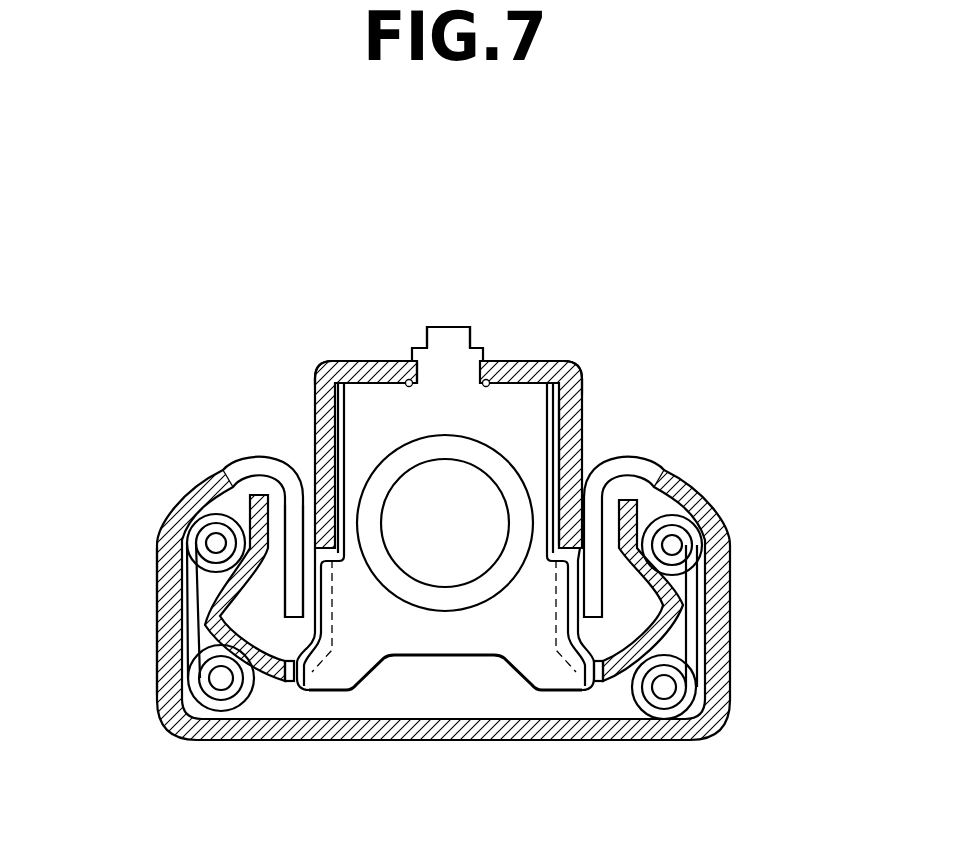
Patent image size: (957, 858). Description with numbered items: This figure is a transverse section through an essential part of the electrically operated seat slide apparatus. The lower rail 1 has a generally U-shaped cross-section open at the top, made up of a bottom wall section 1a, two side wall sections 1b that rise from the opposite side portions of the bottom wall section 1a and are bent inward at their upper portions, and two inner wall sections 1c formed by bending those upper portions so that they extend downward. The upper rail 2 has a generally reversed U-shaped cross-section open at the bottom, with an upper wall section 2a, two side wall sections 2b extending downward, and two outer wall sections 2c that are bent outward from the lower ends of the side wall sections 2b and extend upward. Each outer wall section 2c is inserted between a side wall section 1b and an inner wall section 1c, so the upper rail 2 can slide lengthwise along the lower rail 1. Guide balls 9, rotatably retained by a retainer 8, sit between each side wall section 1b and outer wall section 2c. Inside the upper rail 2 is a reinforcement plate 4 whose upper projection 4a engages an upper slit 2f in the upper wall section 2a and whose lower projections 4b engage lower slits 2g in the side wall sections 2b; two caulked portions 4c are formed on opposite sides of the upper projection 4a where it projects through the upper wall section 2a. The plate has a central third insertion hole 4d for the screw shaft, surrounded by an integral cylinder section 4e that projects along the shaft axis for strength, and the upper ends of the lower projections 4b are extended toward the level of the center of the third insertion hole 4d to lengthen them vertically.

The lower rail 1 is at (465, 742).
The bottom wall section 1a is at (252, 742).
The side wall section 1b is at (160, 623).
The inner wall section 1c is at (285, 589).
The upper rail 2 is at (348, 358).
The upper wall section 2a is at (563, 364).
The side wall section 2b is at (572, 453).
The outer wall section 2c is at (632, 520).
The upper slit 2f is at (421, 373).
The lower slit 2g is at (322, 645).
The reinforcement plate 4 is at (530, 432).
The upper projection 4a is at (455, 335).
The lower projection 4b is at (316, 683).
The caulked portion 4c is at (413, 352).
The third insertion hole 4d is at (322, 378).
The cylinder section 4e is at (432, 510).
The retainer 8 is at (700, 622).
The guide ball 9 is at (702, 546).